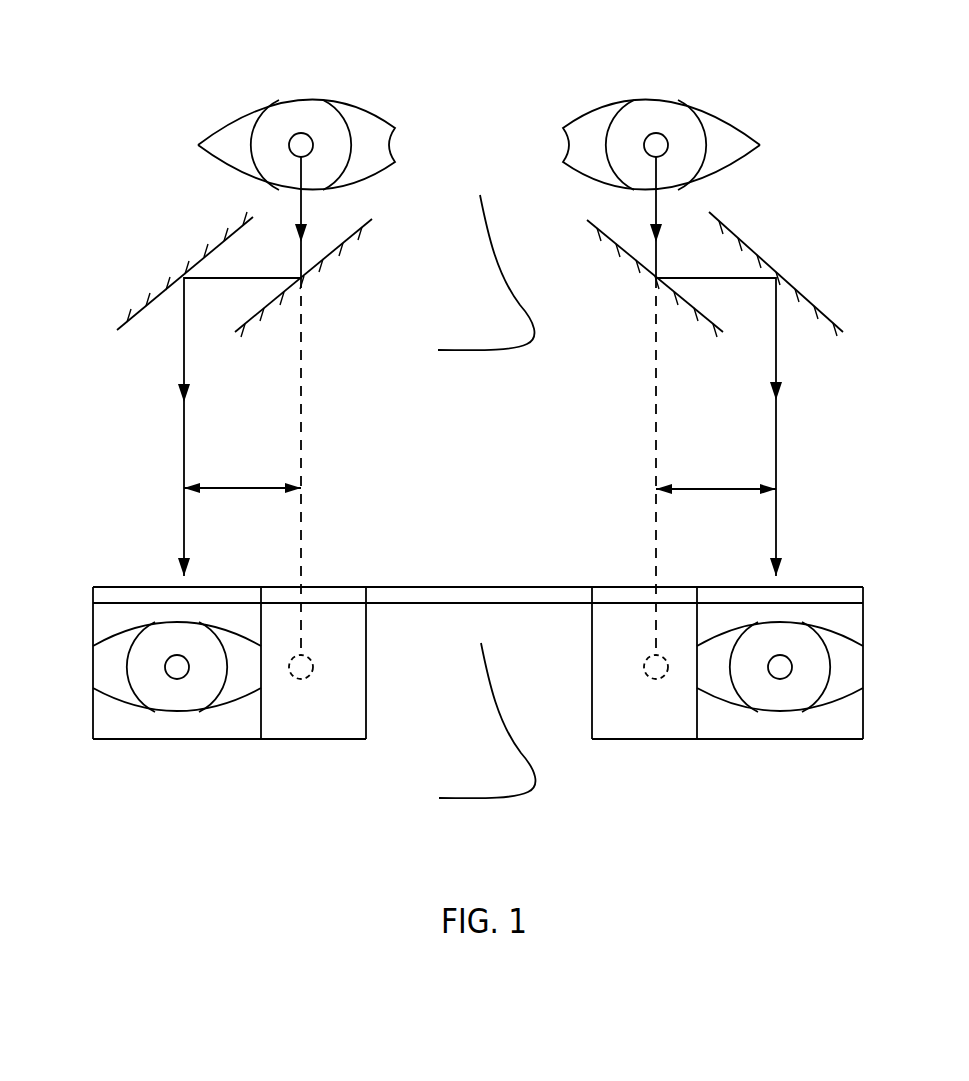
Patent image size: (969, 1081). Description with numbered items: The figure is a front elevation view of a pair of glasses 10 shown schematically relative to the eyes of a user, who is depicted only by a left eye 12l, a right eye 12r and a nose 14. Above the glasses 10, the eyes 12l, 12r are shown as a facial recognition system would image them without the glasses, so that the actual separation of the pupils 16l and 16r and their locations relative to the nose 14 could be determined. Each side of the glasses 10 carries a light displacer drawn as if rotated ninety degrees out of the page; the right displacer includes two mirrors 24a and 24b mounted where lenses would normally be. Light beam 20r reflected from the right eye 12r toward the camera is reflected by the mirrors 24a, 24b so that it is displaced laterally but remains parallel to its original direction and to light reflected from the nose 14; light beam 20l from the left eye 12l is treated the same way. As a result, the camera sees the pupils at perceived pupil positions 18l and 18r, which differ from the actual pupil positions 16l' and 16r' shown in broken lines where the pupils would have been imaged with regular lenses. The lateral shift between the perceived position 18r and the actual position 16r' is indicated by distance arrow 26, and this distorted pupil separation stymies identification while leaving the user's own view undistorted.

The glasses 10 is at (436, 574).
The right eye 12r is at (225, 118).
The left eye 12l is at (597, 108).
The nose 14 is at (502, 265).
The right pupil 16r is at (342, 97).
The left pupil 16l is at (699, 99).
The actual right pupil position 16r' is at (315, 717).
The actual left pupil position 16l' is at (644, 734).
The perceived right pupil position 18r is at (177, 679).
The perceived left pupil position 18l is at (780, 679).
The right light beam 20r is at (184, 442).
The left light beam 20l is at (776, 447).
The first mirror 24a is at (172, 278).
The second mirror 24b is at (333, 260).
The distance arrow 26 is at (237, 487).